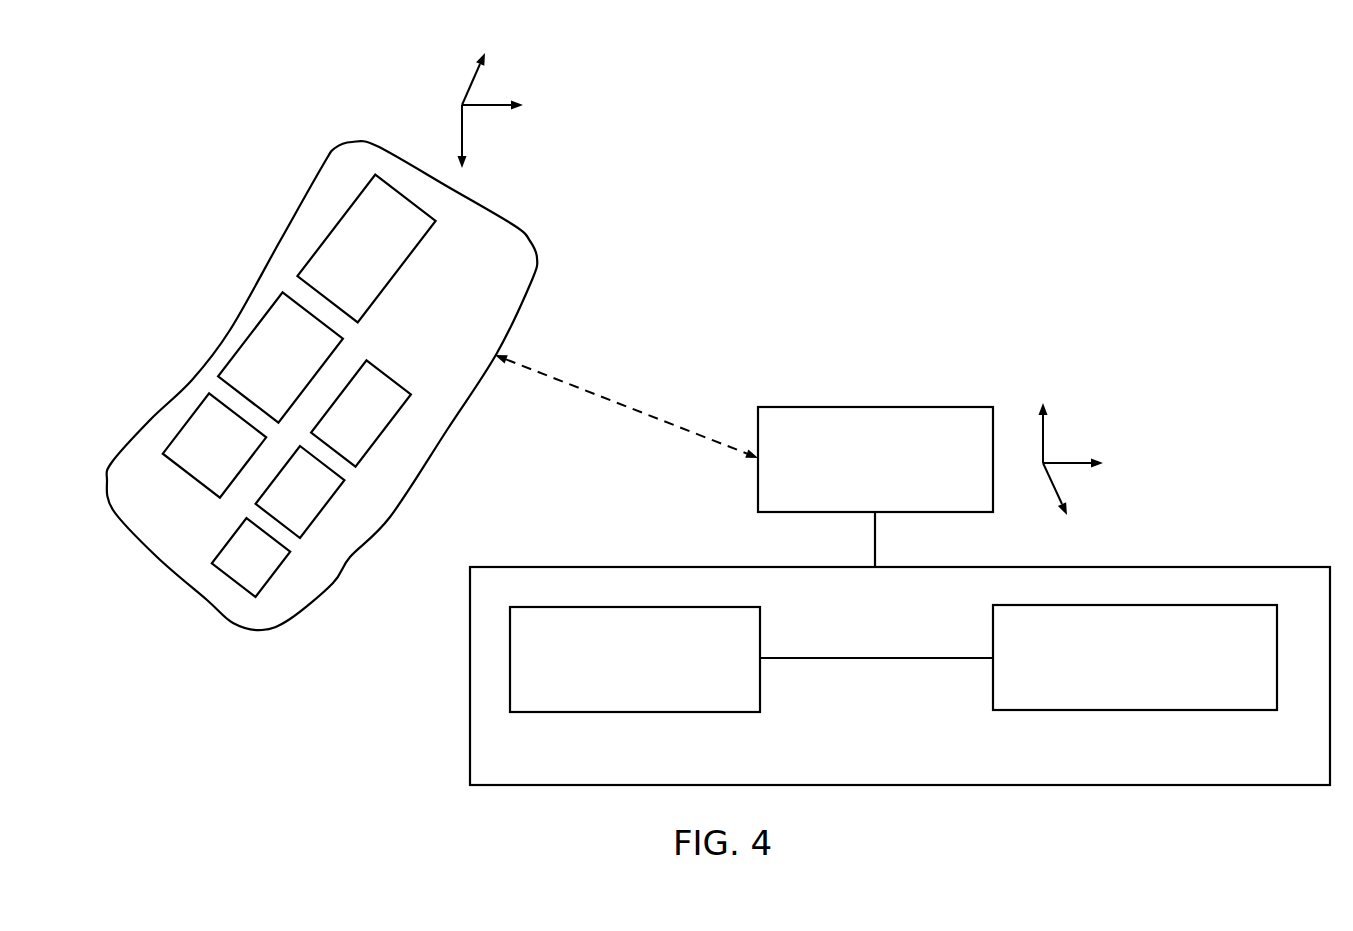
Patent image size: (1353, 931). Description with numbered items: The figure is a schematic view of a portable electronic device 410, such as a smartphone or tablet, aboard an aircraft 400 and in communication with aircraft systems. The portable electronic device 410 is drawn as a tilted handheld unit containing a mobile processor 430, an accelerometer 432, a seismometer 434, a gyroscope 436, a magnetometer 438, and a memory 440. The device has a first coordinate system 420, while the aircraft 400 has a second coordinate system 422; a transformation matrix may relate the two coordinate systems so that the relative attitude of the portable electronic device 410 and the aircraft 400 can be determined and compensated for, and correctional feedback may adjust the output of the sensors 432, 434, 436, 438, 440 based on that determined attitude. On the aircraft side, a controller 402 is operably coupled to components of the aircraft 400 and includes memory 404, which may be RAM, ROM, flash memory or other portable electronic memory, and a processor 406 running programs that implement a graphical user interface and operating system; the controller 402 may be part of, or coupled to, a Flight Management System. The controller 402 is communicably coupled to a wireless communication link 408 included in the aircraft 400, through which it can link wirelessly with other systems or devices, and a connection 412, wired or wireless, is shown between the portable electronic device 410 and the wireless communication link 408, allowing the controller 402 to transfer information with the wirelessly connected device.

The aircraft 400 is at (1130, 216).
The controller 402 is at (1237, 565).
The memory 404 is at (633, 713).
The processor 406 is at (1145, 712).
The wireless communication link 408 is at (875, 407).
The portable electronic device 410 is at (223, 338).
The connection 412 is at (625, 407).
The first coordinate system 420 is at (498, 107).
The second coordinate system 422 is at (1080, 462).
The mobile processor 430 is at (334, 231).
The accelerometer 432 is at (282, 308).
The seismometer 434 is at (384, 428).
The gyroscope 436 is at (194, 408).
The magnetometer 438 is at (324, 507).
The memory 440 is at (271, 577).